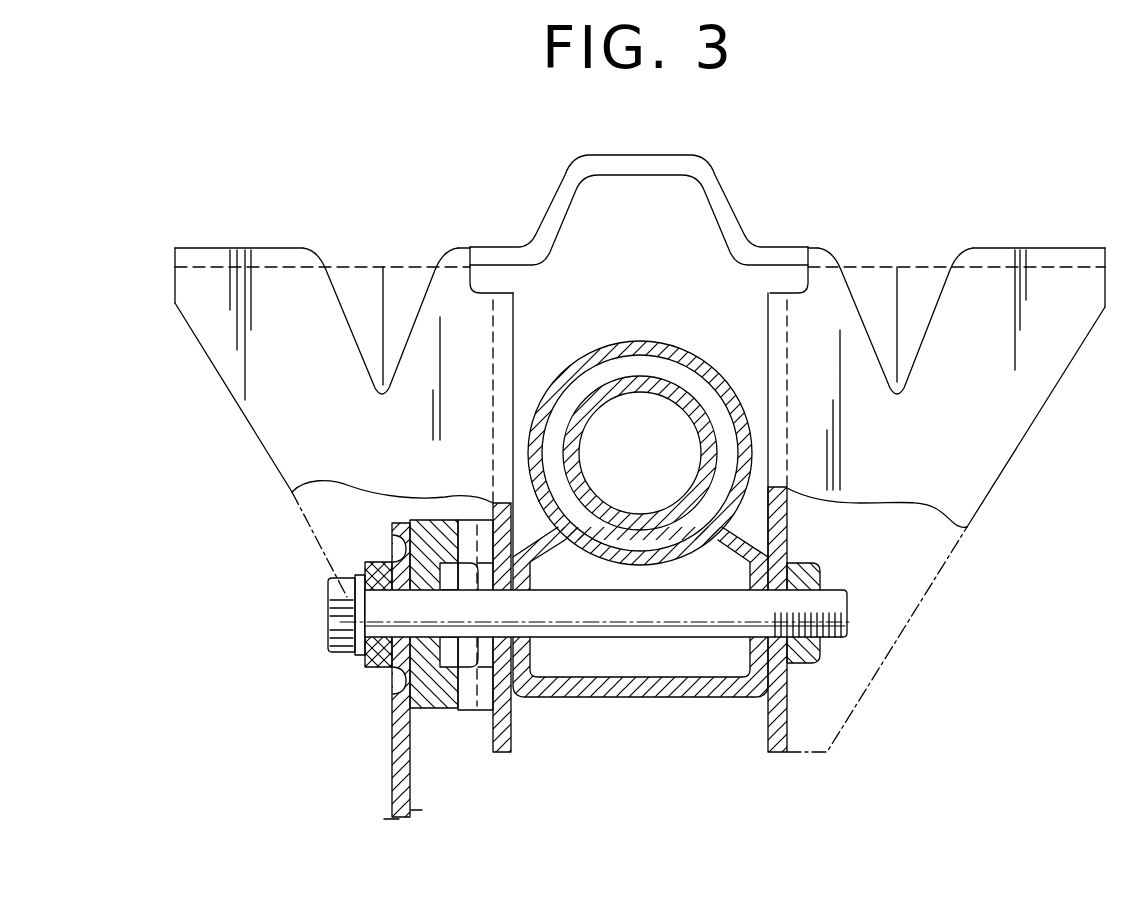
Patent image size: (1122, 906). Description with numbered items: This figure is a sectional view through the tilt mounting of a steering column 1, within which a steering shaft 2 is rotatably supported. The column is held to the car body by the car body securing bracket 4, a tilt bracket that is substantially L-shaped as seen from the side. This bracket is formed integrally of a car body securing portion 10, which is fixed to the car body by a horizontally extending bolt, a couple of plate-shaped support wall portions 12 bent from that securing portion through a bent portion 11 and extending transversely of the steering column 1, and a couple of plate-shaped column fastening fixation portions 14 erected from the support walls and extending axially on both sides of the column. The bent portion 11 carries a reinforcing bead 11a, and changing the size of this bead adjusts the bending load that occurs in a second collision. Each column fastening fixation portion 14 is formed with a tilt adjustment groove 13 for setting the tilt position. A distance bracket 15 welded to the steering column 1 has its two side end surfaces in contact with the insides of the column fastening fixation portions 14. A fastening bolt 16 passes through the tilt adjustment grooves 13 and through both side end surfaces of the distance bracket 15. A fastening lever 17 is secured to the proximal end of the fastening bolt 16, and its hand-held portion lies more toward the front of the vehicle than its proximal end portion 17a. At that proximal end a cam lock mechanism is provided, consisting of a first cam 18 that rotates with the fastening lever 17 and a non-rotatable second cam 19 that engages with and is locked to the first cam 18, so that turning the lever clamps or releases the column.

The steering column 1 is at (697, 352).
The steering shaft 2 is at (637, 375).
The car body securing bracket 4 is at (642, 432).
The car body securing portion 10 is at (777, 247).
The bent portion 11 is at (1053, 255).
The reinforcing bead 11a is at (417, 252).
The support wall portions 12 is at (270, 413).
The tilt adjustment grooves 13 is at (525, 697).
The column fastening fixation portions 14 is at (512, 740).
The distance bracket 15 is at (647, 697).
The fastening bolt 16 is at (596, 625).
The fastening lever 17 is at (386, 763).
The proximal end portion 17a is at (383, 528).
The first cam 18 is at (443, 708).
The second cam 19 is at (487, 750).